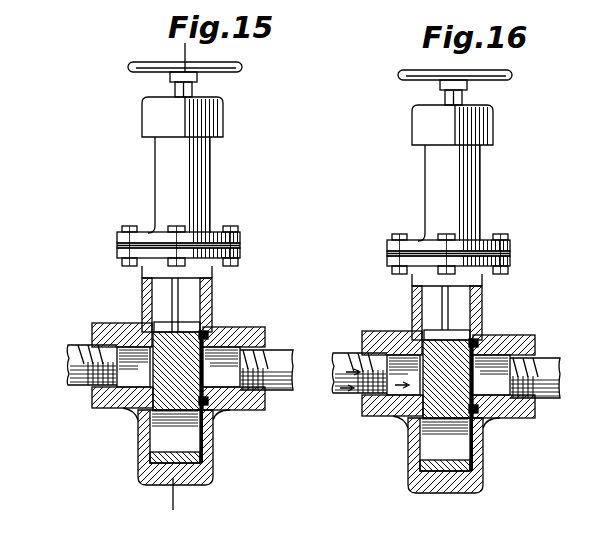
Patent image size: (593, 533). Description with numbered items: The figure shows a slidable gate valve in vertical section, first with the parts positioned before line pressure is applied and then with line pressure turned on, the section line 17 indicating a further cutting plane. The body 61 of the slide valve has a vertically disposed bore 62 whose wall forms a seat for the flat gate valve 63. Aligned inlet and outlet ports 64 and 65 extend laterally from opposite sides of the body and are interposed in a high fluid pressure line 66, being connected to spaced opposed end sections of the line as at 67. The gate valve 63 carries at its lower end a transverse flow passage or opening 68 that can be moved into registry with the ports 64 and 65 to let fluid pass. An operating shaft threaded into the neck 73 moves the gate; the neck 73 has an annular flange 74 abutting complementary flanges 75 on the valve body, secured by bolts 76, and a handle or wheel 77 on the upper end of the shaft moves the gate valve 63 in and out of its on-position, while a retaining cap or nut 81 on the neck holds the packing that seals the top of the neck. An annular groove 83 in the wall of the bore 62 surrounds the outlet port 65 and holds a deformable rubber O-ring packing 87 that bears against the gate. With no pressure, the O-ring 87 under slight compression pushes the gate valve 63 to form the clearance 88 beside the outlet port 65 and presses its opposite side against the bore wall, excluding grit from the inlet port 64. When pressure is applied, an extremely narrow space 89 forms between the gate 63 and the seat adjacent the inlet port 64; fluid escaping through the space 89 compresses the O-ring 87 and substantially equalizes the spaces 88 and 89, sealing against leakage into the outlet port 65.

In FIG. 15, the section line 17- 17 is at (172, 51).
In FIG. 15, the handle or wheel 77 is at (235, 66).
In FIG. 16, the handle or wheel 77 is at (466, 69).
In FIG. 16, the retaining cap or nut 81 is at (472, 125).
In FIG. 16, the neck 73 is at (470, 193).
In FIG. 15, the bolts 76 is at (127, 226).
In FIG. 16, the bolts 76 is at (457, 237).
In FIG. 15, the annular flange 74 is at (241, 240).
In FIG. 16, the annular flange 74 is at (472, 241).
In FIG. 15, the flanges 75 is at (241, 253).
In FIG. 16, the flanges 75 is at (484, 263).
In FIG. 15, the body 61 is at (212, 297).
In FIG. 15, the bore 62 is at (160, 300).
In FIG. 16, the space 89 is at (430, 307).
In FIG. 15, the inlet port 64 is at (131, 330).
In FIG. 15, the outlet port 65 is at (265, 335).
In FIG. 15, the high fluid pressure line 66 is at (72, 360).
In FIG. 16, the high fluid pressure line 66 is at (445, 385).
In FIG. 15, the connection to line end sections 67 is at (93, 395).
In FIG. 15, the O-ring packing 87 is at (208, 331).
In FIG. 16, the O-ring packing 87 is at (496, 328).
In FIG. 15, the space or clearance 88 is at (208, 340).
In FIG. 16, the space or clearance 88 is at (505, 395).
In FIG. 15, the annular groove 83 is at (210, 405).
In FIG. 16, the annular groove 83 is at (503, 423).
In FIG. 15, the gate valve 63 is at (141, 411).
In FIG. 16, the gate valve 63 is at (424, 428).
In FIG. 15, the flow passage or opening 68 is at (160, 437).
In FIG. 16, the flow passage or opening 68 is at (458, 454).